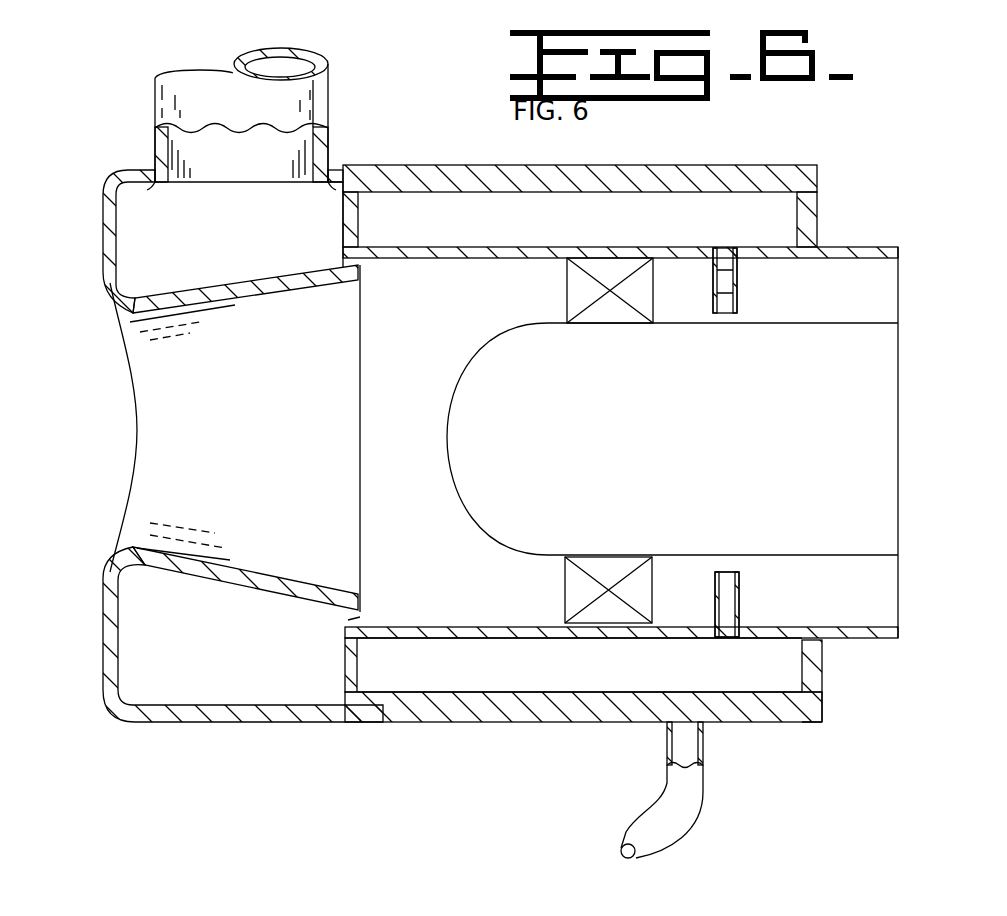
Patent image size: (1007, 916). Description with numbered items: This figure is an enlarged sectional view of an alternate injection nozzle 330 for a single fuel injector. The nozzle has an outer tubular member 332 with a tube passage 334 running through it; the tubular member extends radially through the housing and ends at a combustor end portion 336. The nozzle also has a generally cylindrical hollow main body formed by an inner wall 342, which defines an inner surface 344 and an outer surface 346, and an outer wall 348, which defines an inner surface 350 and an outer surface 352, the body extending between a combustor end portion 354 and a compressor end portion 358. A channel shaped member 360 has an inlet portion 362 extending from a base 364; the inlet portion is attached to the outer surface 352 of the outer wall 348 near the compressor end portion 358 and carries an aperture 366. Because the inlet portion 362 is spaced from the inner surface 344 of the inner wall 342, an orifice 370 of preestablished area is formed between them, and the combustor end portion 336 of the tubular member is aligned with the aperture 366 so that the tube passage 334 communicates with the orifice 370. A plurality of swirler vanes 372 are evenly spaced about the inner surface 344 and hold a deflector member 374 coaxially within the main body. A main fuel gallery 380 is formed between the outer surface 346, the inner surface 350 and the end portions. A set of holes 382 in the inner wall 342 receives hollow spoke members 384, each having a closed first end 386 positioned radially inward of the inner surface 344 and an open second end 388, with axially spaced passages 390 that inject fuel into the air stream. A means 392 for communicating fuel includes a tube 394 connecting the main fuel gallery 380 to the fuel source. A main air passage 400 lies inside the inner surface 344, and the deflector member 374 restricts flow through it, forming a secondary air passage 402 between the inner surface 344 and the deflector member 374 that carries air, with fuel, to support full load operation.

The injection nozzle 330 is at (115, 762).
The outer tubular member 332 is at (153, 110).
The tube passage 334 is at (256, 168).
The combustor end portion 336 is at (320, 182).
The inner wall 342 is at (900, 636).
The inner surface 344 is at (457, 608).
The outer surface 346 is at (448, 640).
The outer wall 348 is at (502, 722).
The inner surface 350 is at (765, 693).
The outer surface 352 is at (770, 722).
The combustor end portion 354 is at (823, 680).
The compressor end portion 358 is at (345, 645).
The channel shaped member 360 is at (150, 722).
The inlet portion 362 is at (233, 553).
The base 364 is at (105, 625).
The aperture 366 is at (166, 182).
The orifice 370 is at (348, 620).
The swirler vanes 372 is at (568, 288).
The deflector member 374 is at (701, 425).
The main fuel gallery 380 is at (554, 227).
The set of holes 382 is at (717, 250).
The hollow spoke members 384 is at (713, 292).
The first end 386 is at (720, 572).
The second end 388 is at (723, 640).
The passages 390 is at (740, 293).
The means for communicating 392 is at (713, 827).
The tube 394 is at (650, 790).
The main air passage 400 is at (424, 425).
The secondary air passage 402 is at (866, 318).